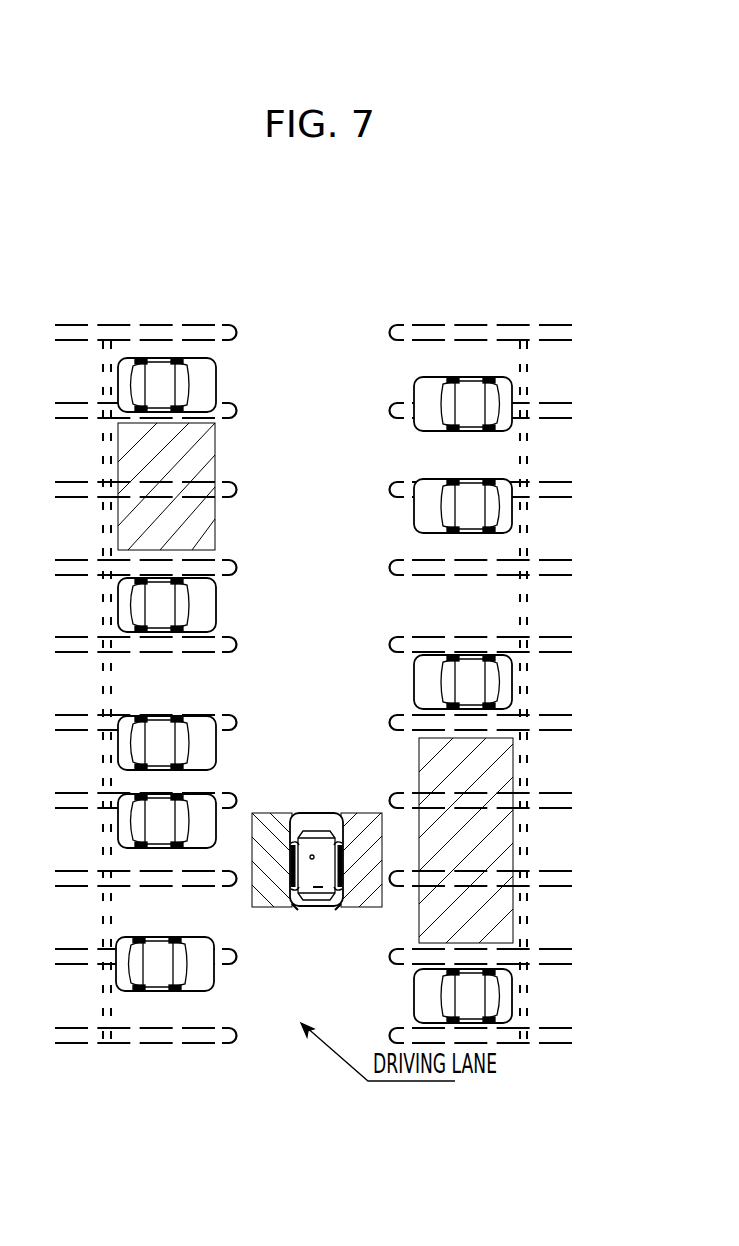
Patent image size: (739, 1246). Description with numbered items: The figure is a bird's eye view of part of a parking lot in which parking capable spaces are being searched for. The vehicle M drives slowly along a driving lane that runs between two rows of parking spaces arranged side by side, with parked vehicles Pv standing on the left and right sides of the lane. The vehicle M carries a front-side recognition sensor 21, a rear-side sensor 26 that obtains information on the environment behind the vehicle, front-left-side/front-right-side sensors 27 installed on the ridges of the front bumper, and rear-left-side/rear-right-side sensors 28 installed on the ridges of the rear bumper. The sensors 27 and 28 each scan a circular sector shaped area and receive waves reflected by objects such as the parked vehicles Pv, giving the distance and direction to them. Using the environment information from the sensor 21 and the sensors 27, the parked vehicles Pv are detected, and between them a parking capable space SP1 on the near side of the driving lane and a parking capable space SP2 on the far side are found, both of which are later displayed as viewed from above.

The parked vehicle Pv is at (217, 368).
The parking capable space on the near side of the driving lane SP1 is at (520, 914).
The parking capable space on the far side of the driving lane SP2 is at (215, 458).
The vehicle M is at (315, 812).
The front-side recognition sensor 21 is at (311, 858).
The rear-side sensor 26 is at (318, 888).
The front-left-side/front-right-side sensors 27 is at (290, 813).
The rear-left-side/rear-right-side sensors 28 is at (297, 910).